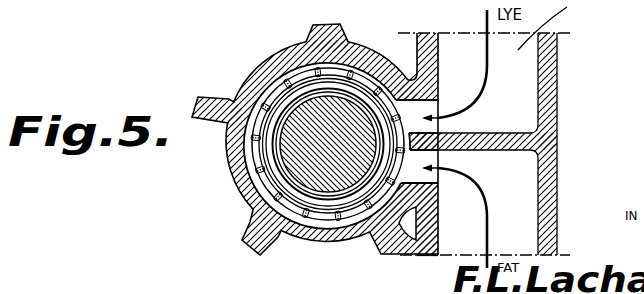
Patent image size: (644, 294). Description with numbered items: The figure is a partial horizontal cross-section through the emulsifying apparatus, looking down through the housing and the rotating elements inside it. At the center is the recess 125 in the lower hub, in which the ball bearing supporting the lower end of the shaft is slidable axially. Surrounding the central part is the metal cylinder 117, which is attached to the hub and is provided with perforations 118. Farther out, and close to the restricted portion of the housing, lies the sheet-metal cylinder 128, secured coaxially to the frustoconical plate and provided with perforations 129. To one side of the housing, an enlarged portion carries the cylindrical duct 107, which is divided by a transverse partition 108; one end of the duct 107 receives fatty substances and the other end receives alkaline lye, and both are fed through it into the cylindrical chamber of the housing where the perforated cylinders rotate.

The cylindrical duct 107 is at (450, 240).
The transverse partition 108 is at (503, 137).
The metal cylinder 117 is at (307, 213).
The perforations 118 is at (277, 193).
The recess 125 is at (293, 150).
The cylinder 128 is at (347, 70).
The perforations 129 is at (290, 75).